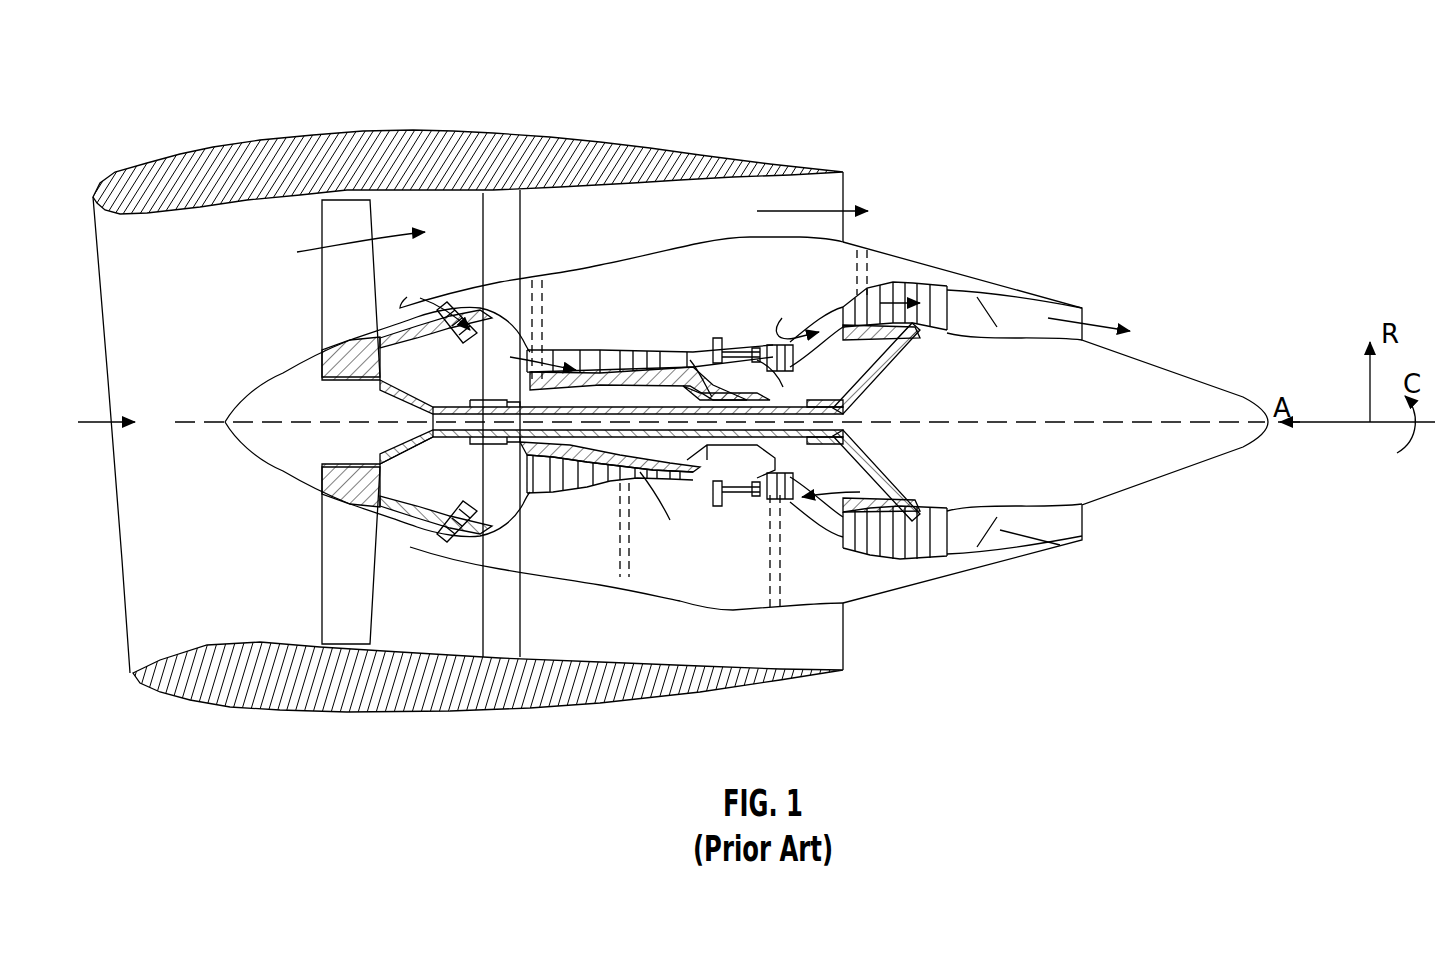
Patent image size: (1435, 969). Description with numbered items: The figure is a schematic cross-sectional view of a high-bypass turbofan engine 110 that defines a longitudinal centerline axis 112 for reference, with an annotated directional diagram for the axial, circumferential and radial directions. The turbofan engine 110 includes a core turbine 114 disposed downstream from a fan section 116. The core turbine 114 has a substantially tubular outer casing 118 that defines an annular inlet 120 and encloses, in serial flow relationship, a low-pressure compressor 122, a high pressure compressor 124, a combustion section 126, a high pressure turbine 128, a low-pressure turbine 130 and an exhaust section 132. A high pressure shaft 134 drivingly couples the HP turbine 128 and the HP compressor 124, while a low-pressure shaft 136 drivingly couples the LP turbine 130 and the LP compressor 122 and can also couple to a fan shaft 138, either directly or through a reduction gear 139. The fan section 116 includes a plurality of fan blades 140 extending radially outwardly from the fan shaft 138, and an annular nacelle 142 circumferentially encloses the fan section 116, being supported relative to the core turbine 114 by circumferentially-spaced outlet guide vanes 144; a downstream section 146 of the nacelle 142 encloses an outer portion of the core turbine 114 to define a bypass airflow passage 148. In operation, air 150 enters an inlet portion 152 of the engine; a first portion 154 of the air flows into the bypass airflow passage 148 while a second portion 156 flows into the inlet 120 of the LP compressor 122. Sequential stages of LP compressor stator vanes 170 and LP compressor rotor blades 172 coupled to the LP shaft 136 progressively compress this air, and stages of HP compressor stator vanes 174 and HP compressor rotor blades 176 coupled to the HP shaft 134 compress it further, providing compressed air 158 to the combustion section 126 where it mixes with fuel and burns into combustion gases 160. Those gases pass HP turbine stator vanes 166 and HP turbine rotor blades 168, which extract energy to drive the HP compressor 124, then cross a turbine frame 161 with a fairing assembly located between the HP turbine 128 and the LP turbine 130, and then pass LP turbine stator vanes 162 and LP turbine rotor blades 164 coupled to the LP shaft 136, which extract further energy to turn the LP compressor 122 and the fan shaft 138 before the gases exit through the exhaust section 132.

The turbofan engine 110 is at (996, 140).
The longitudinal or axial centerline axis 112 is at (1032, 422).
The core turbine 114 is at (656, 312).
The fan section 116 is at (359, 121).
The outer casing 118 is at (682, 603).
The annular inlet 120 is at (420, 537).
The low-pressure compressor 122 is at (479, 514).
The high pressure compressor 124 is at (552, 495).
The combustion section 126 is at (738, 500).
The high pressure turbine 128 is at (855, 478).
The low-pressure turbine 130 is at (934, 566).
The exhaust section 132 is at (1092, 313).
The high pressure shaft 134 is at (790, 345).
The low-pressure shaft 136 is at (493, 402).
The fan shaft 138 is at (373, 382).
The reduction gear 139 is at (490, 450).
The fan blades 140 is at (321, 597).
The nacelle 142 is at (367, 710).
The outlet guide vanes 144 is at (521, 212).
The downstream section 146 is at (746, 147).
The bypass airflow passage 148 is at (686, 230).
The air 150 is at (138, 422).
The inlet portion 152 is at (120, 641).
The first portion of the air 154 is at (340, 240).
The second portion of the air 156 is at (405, 310).
The compressed air 158 is at (722, 386).
The combustion gases 160 is at (1067, 315).
The turbine frame 161 is at (845, 343).
The LP turbine stator vanes 162 is at (853, 322).
The LP turbine rotor blades 164 is at (852, 267).
The HP turbine stator vanes 166 is at (777, 545).
The HP turbine rotor blades 168 is at (776, 494).
The LP compressor stator vanes 170 is at (455, 545).
The LP compressor rotor blades 172 is at (455, 580).
The HP compressor stator vanes 174 is at (630, 505).
The HP compressor rotor blades 176 is at (660, 540).